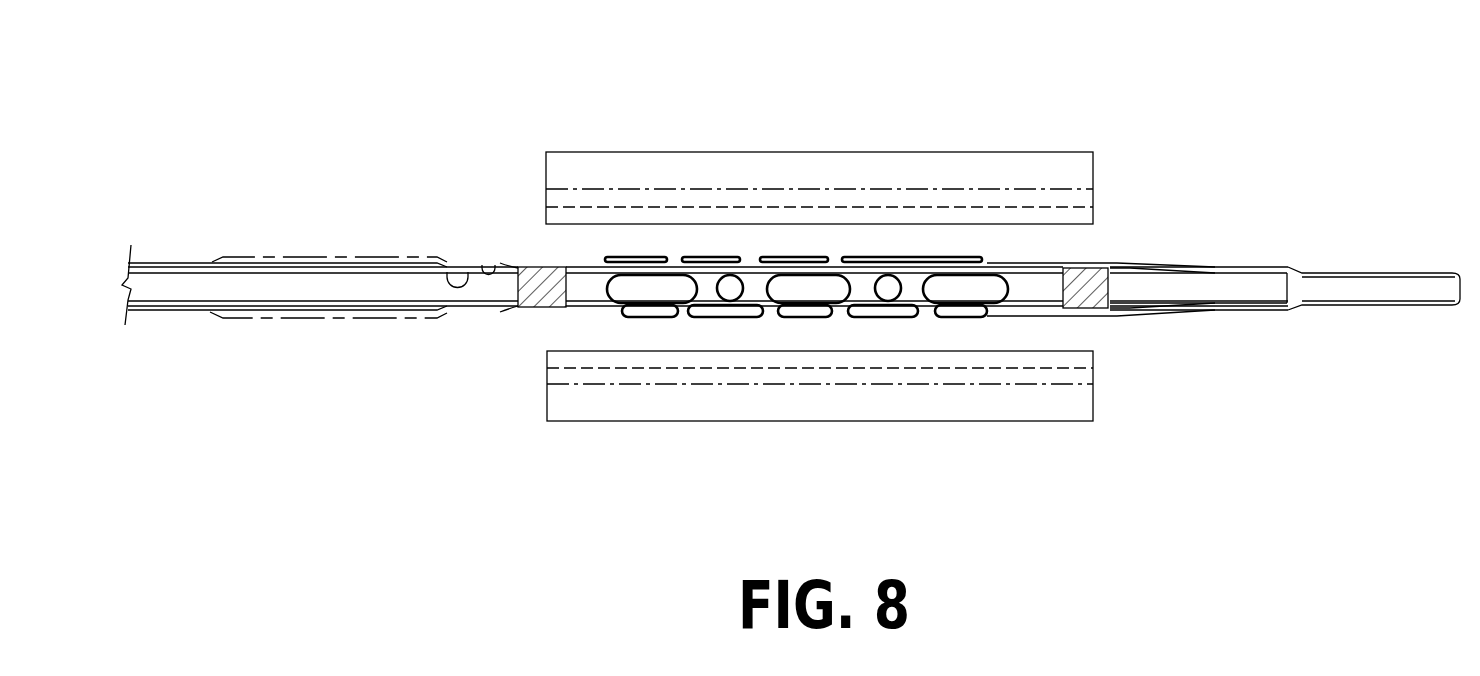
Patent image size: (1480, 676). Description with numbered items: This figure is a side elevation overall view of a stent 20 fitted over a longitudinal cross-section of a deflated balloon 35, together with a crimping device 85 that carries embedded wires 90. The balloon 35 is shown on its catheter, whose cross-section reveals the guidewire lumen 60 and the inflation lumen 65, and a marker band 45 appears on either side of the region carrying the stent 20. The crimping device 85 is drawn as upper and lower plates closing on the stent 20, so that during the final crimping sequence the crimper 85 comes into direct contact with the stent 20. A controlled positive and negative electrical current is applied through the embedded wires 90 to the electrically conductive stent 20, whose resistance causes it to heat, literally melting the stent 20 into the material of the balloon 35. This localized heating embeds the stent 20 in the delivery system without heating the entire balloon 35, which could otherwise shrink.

The stent 20 is at (692, 272).
The balloon 35 is at (1176, 265).
The marker band 45 is at (531, 267).
The guidewire lumen 60 is at (447, 272).
The inflation lumen 65 is at (482, 265).
The crimping device 85 is at (827, 122).
The embedded wire 90 is at (642, 197).